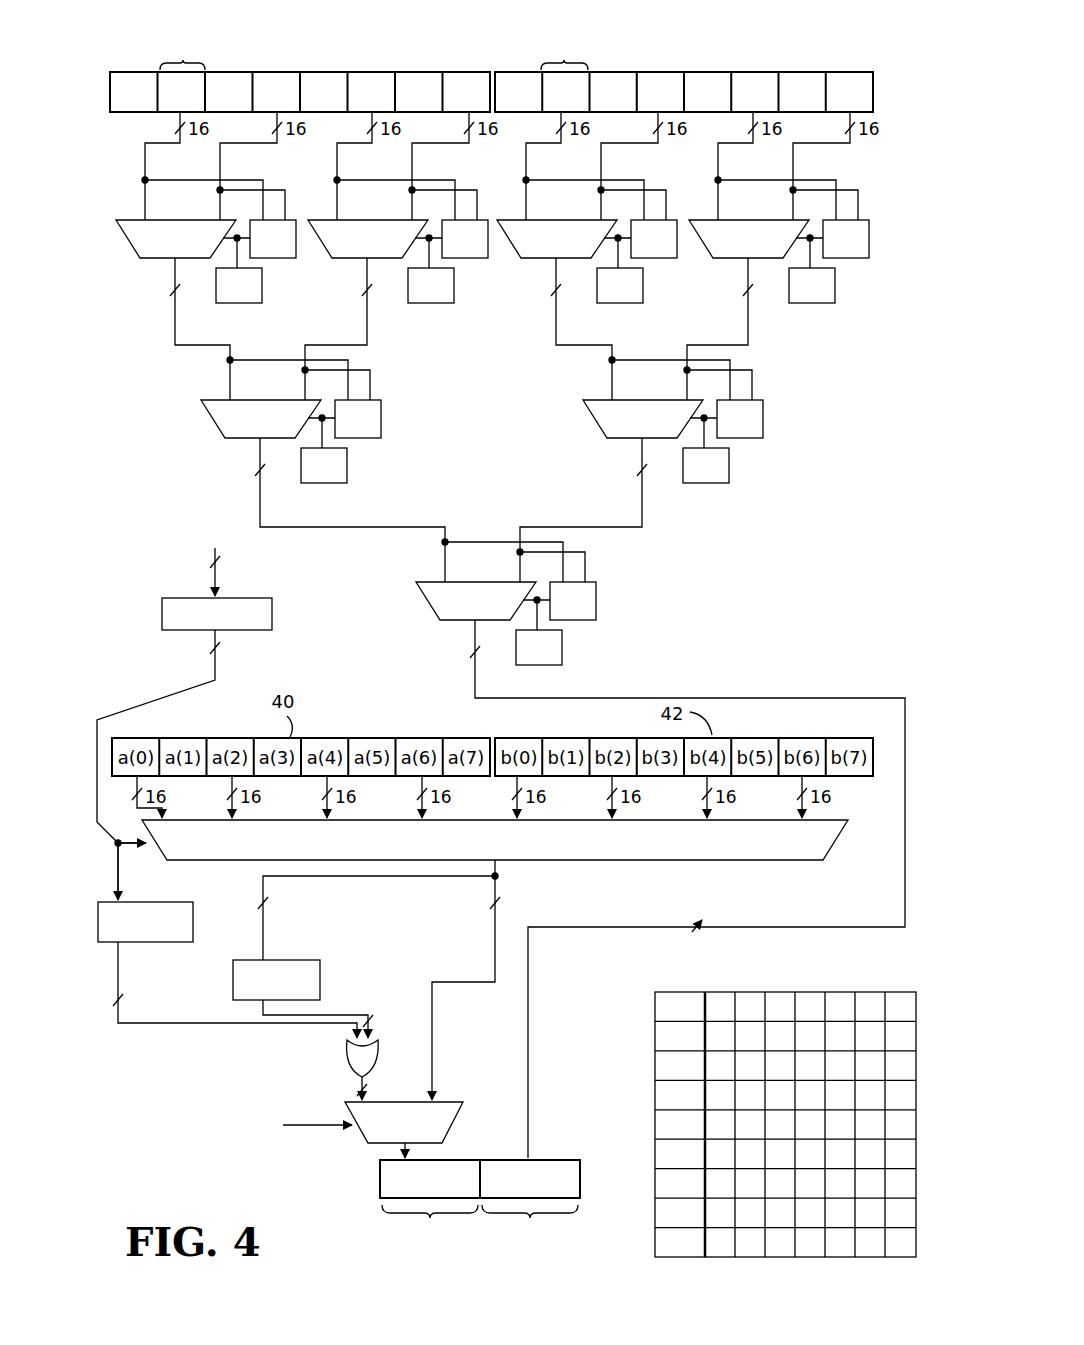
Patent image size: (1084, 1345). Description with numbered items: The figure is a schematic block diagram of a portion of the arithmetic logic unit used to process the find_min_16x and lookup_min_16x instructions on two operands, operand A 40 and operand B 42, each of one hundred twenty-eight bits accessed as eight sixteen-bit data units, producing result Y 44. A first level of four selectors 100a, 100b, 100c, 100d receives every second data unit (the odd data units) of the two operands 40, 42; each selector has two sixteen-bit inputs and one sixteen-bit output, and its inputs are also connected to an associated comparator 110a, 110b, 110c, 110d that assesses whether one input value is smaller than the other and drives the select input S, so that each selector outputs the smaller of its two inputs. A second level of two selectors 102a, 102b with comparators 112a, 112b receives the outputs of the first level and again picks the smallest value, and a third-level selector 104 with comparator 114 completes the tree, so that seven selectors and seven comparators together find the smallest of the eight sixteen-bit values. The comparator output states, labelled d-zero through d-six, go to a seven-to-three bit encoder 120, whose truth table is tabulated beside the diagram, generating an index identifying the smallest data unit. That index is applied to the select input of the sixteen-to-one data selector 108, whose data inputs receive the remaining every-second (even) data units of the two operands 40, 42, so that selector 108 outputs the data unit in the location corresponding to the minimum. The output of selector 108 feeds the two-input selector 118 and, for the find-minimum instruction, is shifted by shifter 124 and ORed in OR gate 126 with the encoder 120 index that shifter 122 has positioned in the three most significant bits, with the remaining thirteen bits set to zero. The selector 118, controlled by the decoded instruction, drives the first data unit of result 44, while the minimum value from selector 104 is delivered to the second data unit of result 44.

The operand A 40 is at (128, 70).
The operand B 42 is at (852, 70).
The selector 100a is at (133, 248).
The selector 100b is at (325, 248).
The selector 100c is at (514, 248).
The selector 100d is at (706, 248).
The comparator 110a is at (285, 260).
The comparator 110b is at (477, 260).
The comparator 110c is at (666, 260).
The comparator 110d is at (858, 260).
The selector 102a is at (218, 428).
The selector 102b is at (600, 428).
The comparator 112a is at (370, 440).
The comparator 112b is at (757, 440).
The selector 104 is at (433, 610).
The comparator 114 is at (590, 622).
The encoder 120 is at (272, 610).
The data selector 108 is at (848, 830).
The shifter 122 is at (193, 918).
The shifter 124 is at (320, 975).
The OR gate 126 is at (378, 1050).
The selector 118 is at (304, 1145).
The result Y 44 is at (580, 1175).